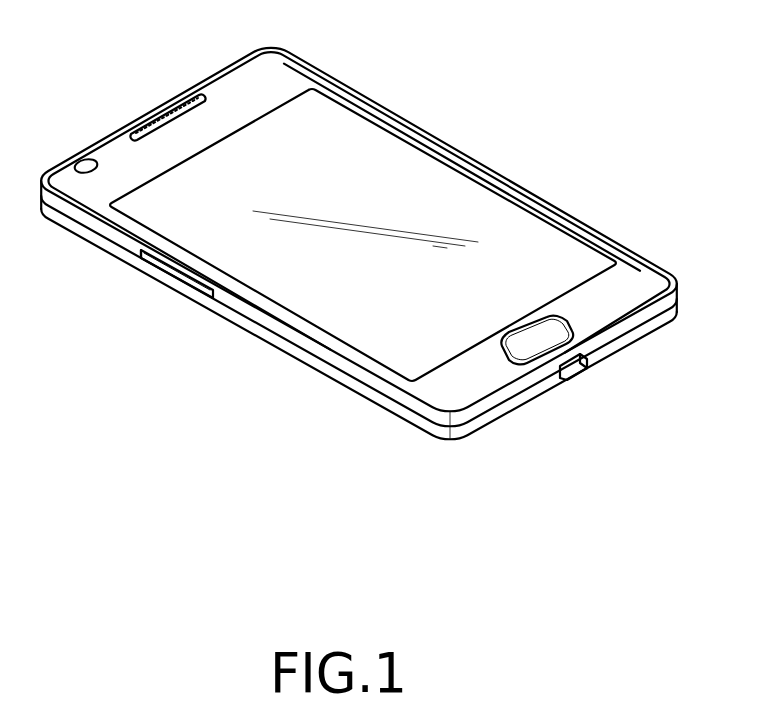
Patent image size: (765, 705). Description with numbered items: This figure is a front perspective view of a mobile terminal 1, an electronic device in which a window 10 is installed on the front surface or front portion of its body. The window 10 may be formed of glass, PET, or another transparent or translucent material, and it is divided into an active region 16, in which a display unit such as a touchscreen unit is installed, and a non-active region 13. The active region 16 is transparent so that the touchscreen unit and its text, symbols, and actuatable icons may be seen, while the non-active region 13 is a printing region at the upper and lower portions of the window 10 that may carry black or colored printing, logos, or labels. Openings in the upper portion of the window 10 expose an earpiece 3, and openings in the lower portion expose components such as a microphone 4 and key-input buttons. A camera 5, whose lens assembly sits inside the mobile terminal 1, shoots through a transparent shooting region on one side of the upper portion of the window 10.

The mobile terminal 1 is at (507, 142).
The earpiece 3 is at (158, 118).
The microphone 4 is at (653, 290).
The camera 5 is at (83, 163).
The window 10 is at (557, 249).
The non-active region 13 is at (272, 67).
The active region 16 is at (371, 148).